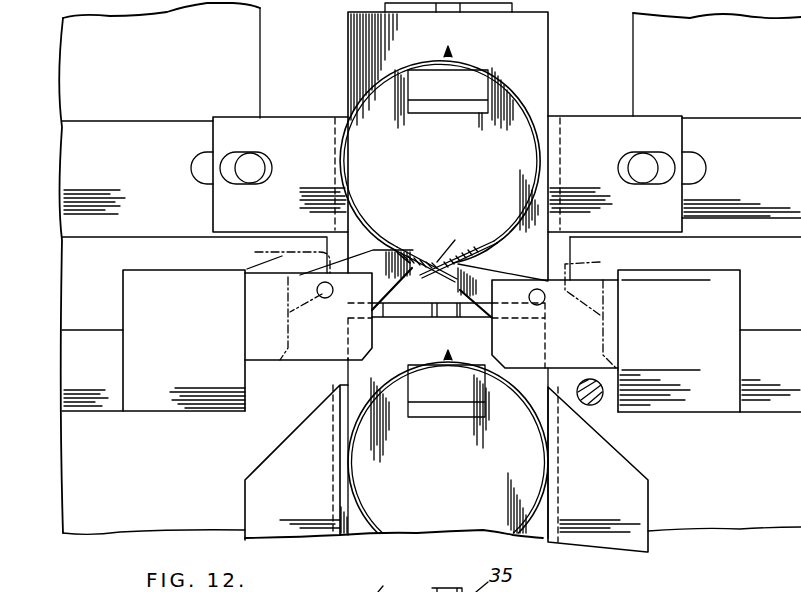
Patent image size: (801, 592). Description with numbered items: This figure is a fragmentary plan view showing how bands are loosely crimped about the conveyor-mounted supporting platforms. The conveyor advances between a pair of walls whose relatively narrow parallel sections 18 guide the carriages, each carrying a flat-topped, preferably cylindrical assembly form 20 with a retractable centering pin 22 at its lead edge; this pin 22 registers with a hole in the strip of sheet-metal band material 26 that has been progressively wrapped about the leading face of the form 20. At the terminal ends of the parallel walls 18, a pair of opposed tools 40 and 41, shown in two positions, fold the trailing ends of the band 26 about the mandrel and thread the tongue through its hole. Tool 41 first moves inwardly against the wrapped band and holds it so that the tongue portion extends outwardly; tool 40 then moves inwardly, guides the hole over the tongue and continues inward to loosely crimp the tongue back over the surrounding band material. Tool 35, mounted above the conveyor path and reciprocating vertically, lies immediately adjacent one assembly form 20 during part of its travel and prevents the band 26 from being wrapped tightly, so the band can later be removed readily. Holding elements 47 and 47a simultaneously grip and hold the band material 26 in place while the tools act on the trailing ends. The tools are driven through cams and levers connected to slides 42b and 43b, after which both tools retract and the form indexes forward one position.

The parallel sections 18 is at (345, 505).
The assembly form 20 is at (428, 156).
The retractable centering pin 22 is at (450, 52).
The band material 26 is at (474, 59).
The tool 35 is at (458, 244).
The tool 40 is at (468, 326).
The tool 41 is at (386, 330).
The slide 42b is at (110, 402).
The slide 43b is at (782, 403).
The holding element 47 is at (318, 148).
The holding element 47a is at (606, 148).